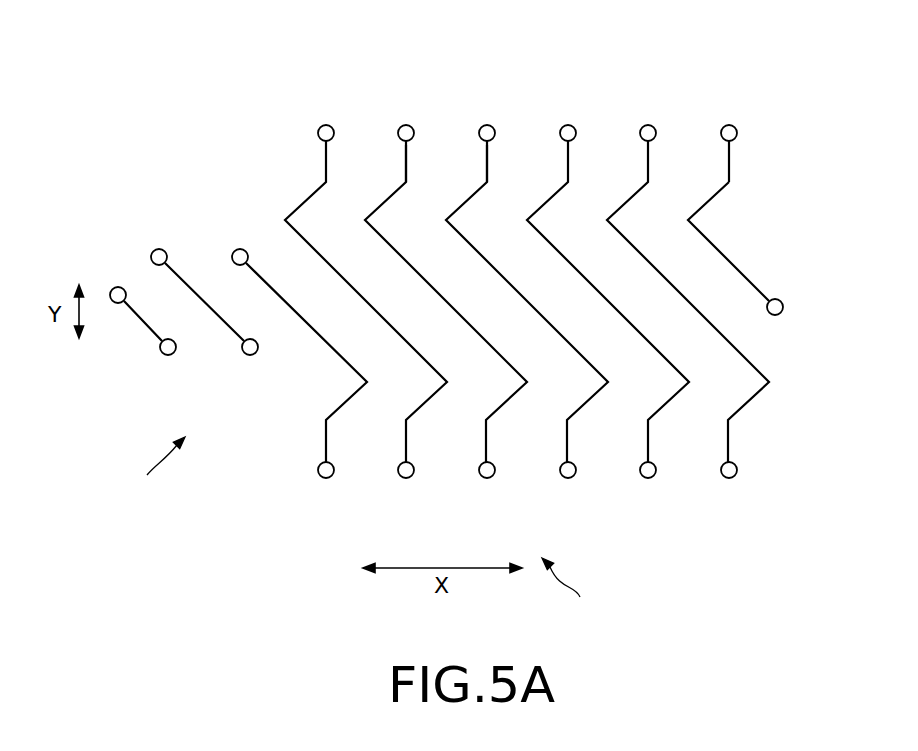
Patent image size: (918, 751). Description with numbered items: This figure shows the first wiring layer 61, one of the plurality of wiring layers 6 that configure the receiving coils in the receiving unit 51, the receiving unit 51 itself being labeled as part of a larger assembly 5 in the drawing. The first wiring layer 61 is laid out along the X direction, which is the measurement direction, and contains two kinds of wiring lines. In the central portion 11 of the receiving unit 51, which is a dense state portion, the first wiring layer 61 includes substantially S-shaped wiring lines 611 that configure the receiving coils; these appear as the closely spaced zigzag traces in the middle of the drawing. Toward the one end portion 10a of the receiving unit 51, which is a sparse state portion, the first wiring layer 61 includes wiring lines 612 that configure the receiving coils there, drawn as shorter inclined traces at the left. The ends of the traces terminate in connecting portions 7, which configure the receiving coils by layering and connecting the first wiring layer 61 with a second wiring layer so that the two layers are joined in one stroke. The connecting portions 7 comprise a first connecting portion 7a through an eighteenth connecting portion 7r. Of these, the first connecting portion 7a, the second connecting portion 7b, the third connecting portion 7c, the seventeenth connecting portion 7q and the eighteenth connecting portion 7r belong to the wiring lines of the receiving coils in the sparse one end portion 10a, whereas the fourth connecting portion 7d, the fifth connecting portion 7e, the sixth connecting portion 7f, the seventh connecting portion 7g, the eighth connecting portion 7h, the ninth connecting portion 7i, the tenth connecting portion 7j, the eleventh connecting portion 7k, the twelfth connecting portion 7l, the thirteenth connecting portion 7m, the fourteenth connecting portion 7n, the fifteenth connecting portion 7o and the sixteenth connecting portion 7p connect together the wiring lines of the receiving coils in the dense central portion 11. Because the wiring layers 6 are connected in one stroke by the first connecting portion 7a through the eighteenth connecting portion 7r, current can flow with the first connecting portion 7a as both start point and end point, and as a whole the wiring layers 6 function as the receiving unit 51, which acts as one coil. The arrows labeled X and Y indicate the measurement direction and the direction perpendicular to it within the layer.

The connecting portions 7 is at (437, 280).
The first connecting portion 7a is at (112, 290).
The second connecting portion 7b is at (154, 250).
The third connecting portion 7c is at (247, 354).
The fourth connecting portion 7d is at (321, 126).
The fifth connecting portion 7e is at (403, 477).
The sixth connecting portion 7f is at (482, 126).
The seventh connecting portion 7g is at (565, 477).
The eighth connecting portion 7h is at (643, 126).
The ninth connecting portion 7i is at (726, 477).
The tenth connecting portion 7j is at (780, 299).
The eleventh connecting portion 7k is at (724, 126).
The twelfth connecting portion 7l is at (645, 477).
The thirteenth connecting portion 7m is at (563, 126).
The fourteenth connecting portion 7n is at (484, 477).
The fifteenth connecting portion 7o is at (401, 126).
The sixteenth connecting portion 7p is at (323, 477).
The seventeenth connecting portion 7q is at (234, 250).
The eighteenth connecting portion 7r is at (165, 354).
The lead portion 5 is at (782, 99).
The receiving unit 51 is at (750, 72).
The wiring layers 6 is at (765, 206).
The first wiring layer 61 is at (760, 167).
The wiring lines 611 is at (487, 163).
The wiring lines 612 is at (187, 288).
The one end portion 10a is at (157, 471).
The central portion 11 is at (576, 593).